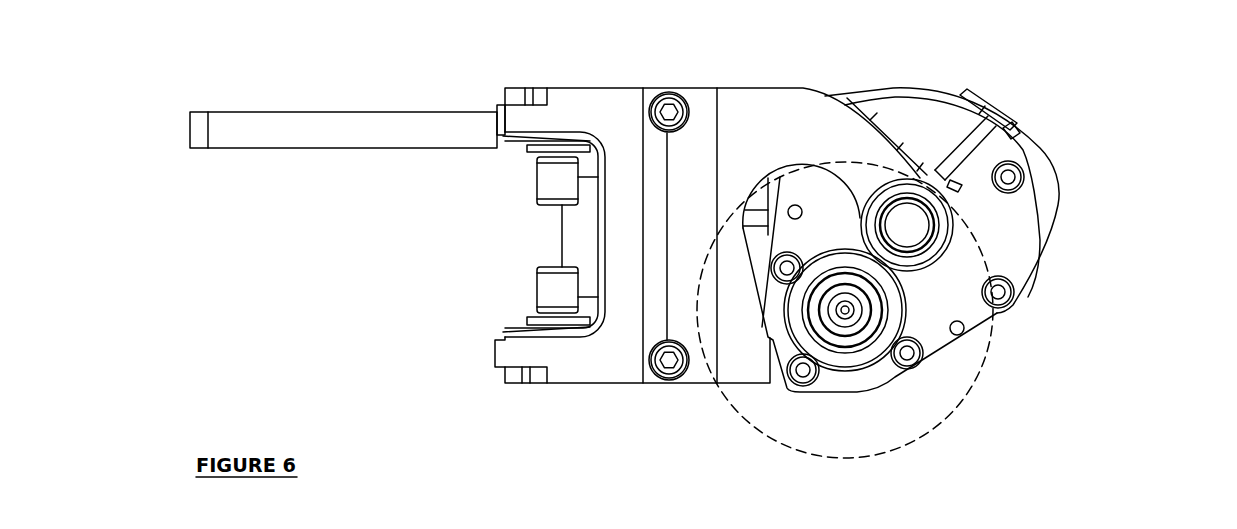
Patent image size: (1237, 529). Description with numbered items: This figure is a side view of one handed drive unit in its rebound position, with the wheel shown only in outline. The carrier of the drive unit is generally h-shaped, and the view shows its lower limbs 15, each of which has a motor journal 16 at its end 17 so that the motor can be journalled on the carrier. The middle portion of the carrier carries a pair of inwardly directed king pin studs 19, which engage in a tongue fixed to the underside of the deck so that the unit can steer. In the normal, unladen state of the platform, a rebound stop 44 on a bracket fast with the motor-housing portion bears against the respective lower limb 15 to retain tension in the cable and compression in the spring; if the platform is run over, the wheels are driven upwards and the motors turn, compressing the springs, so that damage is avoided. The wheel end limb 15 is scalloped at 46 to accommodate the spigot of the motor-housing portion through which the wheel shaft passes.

The lower limb 15 is at (757, 147).
The motor journal 16 is at (930, 245).
The end 17 is at (857, 180).
The king pin stud 19 is at (547, 178).
The rebound stop 44 is at (885, 140).
The scallop 46 is at (800, 175).